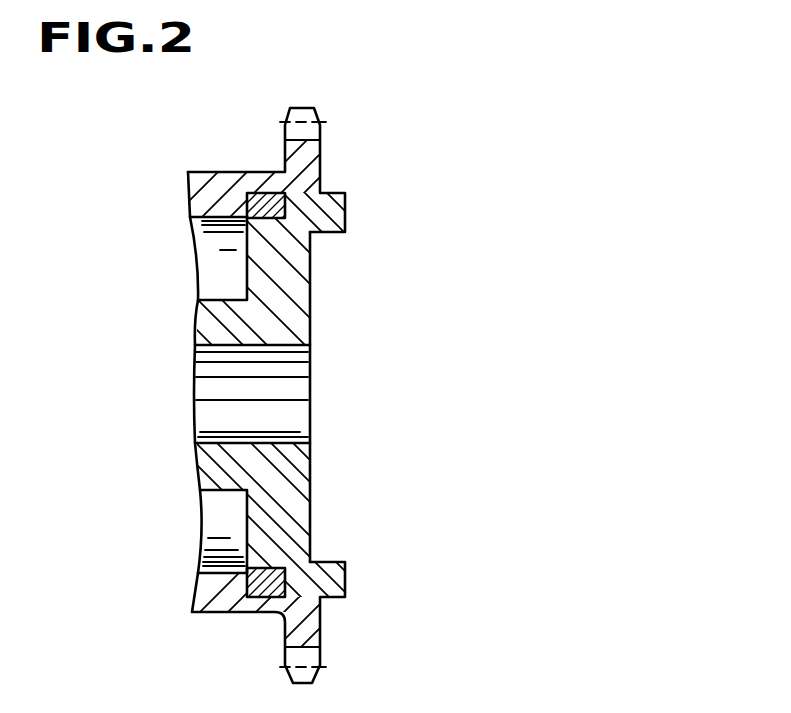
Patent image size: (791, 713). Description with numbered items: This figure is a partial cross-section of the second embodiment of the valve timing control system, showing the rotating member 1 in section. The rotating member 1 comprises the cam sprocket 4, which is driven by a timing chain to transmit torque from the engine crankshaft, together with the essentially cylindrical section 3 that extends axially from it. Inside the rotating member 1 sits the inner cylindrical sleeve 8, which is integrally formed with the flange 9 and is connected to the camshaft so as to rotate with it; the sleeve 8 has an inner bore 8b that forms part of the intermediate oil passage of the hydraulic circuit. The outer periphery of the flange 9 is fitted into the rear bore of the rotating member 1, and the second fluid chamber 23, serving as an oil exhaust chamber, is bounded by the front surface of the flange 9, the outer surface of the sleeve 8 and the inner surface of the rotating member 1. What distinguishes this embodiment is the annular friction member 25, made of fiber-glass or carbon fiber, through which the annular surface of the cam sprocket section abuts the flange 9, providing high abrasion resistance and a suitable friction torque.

The rotating member 1 is at (191, 95).
The cylindrical section 3 is at (190, 172).
The cam sprocket 4 is at (322, 132).
The flange 9 is at (303, 297).
The second fluid chamber 23 is at (210, 264).
The annular friction member 25 is at (305, 236).
The inner cylindrical sleeve 8 is at (220, 495).
The inner bore 8b is at (307, 443).